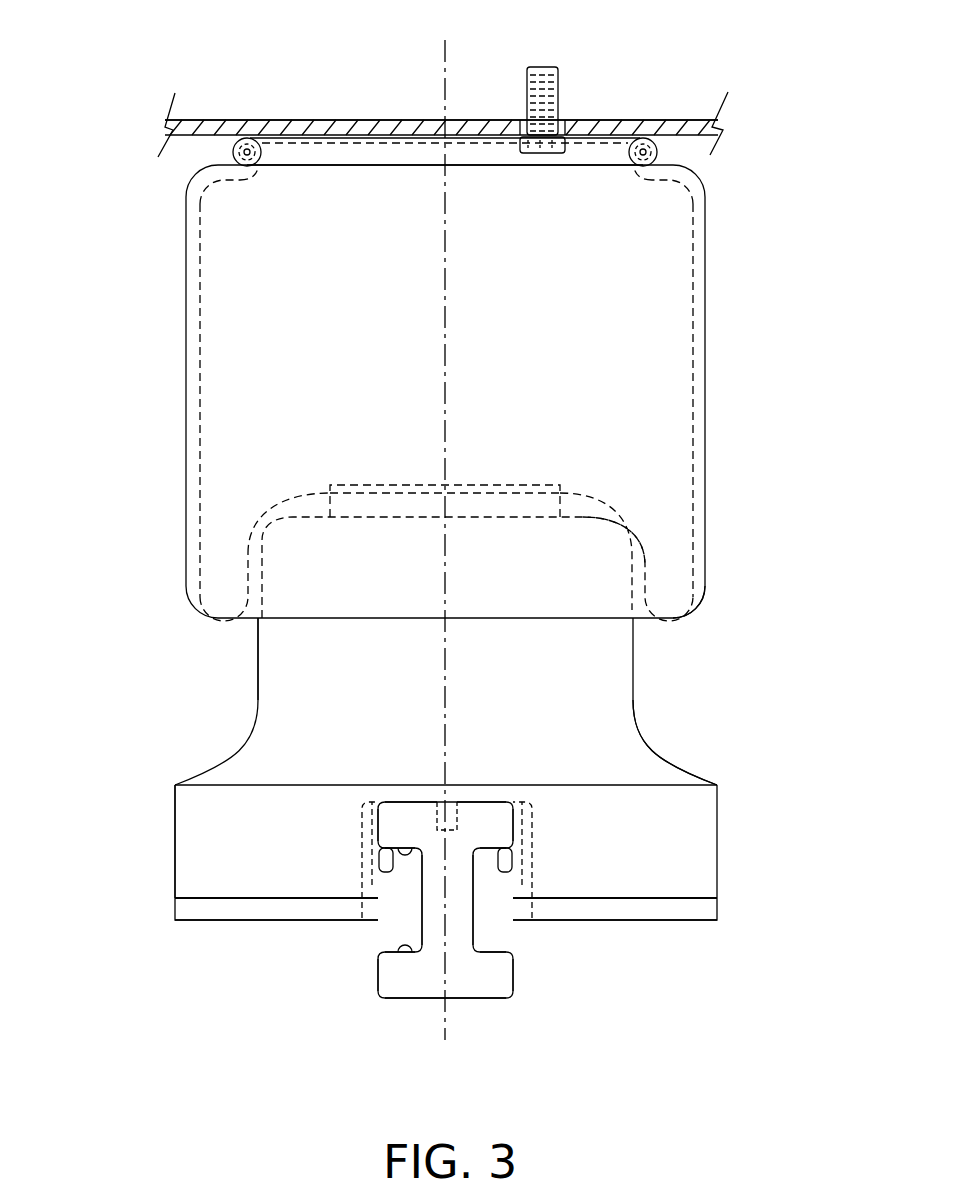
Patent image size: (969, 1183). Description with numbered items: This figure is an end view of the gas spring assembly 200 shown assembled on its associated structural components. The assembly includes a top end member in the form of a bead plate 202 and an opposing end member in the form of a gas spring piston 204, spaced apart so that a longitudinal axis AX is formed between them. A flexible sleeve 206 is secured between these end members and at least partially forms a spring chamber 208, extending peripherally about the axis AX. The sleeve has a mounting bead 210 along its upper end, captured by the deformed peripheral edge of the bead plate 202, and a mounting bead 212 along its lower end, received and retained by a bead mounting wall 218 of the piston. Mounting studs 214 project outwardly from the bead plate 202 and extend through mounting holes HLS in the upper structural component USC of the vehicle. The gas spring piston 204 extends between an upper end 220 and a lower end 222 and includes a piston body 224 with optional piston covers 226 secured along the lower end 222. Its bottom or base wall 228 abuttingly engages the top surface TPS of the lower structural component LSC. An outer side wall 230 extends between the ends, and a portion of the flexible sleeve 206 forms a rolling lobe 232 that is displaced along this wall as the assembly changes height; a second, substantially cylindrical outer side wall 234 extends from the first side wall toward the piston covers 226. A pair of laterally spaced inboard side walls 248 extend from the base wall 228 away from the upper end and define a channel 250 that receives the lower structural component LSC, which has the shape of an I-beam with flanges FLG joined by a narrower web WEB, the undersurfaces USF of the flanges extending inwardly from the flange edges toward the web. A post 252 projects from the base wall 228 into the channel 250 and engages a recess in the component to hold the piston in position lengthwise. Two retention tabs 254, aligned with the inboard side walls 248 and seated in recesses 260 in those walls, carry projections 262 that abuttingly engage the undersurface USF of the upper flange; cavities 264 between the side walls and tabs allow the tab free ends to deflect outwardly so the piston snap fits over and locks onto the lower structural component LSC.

The gas spring assembly 200 is at (738, 212).
The bead plate 202 is at (340, 118).
The gas spring piston 204 is at (705, 702).
The flexible sleeve 206 is at (710, 365).
The spring chamber 208 is at (250, 295).
The mounting bead 210 is at (636, 185).
The mounting bead 212 is at (577, 500).
The mounting stud 214 is at (558, 80).
The bead mounting wall 218 is at (500, 507).
The end 220 is at (630, 523).
The end 222 is at (755, 840).
The piston body 224 is at (312, 692).
The piston cover 226 is at (215, 922).
The base wall 228 is at (490, 805).
The outer side wall 230 is at (690, 752).
The rolling lobe 232 is at (693, 620).
The outer side wall 234 is at (185, 862).
The inboard side wall 248 is at (362, 893).
The channel 250 is at (392, 924).
The post 252 is at (460, 818).
The retention tab 254 is at (358, 860).
The recess 260 is at (540, 835).
The projection 262 is at (515, 862).
The cavity 264 is at (368, 820).
The upper structural component USC is at (242, 117).
The mounting hole HLS is at (515, 130).
The longitudinal axis AX is at (442, 270).
The top surface TPS is at (430, 818).
The undersurface USF is at (408, 846).
The flange FLG is at (505, 810).
The web WEB is at (460, 940).
The lower structural component LSC is at (470, 986).